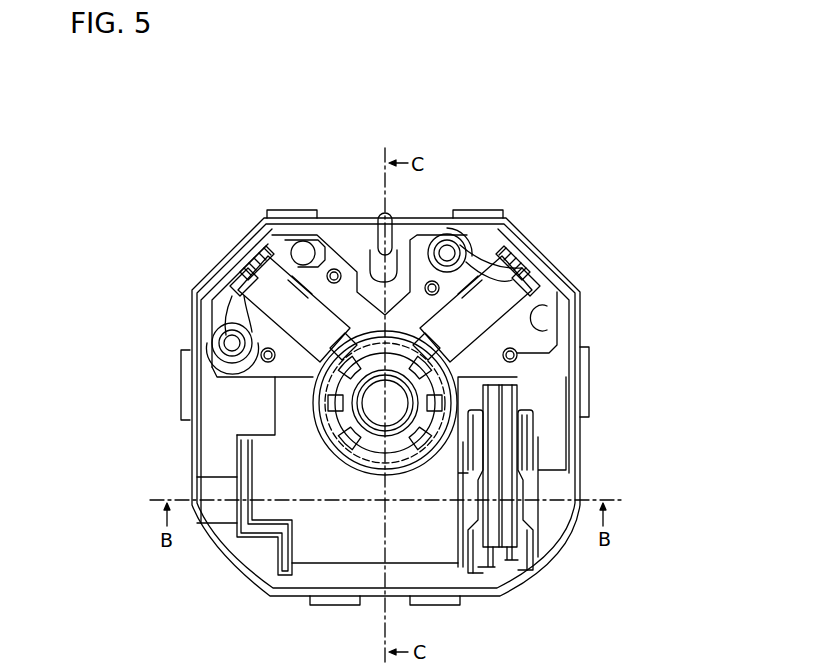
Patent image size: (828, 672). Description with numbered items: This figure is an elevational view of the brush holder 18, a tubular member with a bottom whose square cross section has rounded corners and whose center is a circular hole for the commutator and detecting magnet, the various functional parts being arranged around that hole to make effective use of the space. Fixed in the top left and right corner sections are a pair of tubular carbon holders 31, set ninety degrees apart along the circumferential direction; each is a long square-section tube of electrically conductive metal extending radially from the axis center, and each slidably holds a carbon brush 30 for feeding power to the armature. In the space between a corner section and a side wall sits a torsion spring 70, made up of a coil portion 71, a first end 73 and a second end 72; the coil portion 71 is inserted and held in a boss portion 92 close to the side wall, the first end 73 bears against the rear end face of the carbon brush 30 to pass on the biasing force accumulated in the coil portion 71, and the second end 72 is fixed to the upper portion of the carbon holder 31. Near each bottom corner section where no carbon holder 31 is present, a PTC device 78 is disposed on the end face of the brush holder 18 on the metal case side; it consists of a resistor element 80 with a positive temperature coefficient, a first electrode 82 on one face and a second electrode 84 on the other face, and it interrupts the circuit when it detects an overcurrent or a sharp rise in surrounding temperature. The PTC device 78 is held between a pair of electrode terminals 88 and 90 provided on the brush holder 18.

The brush holder 18 is at (593, 102).
The carbon brush 30 is at (330, 378).
The carbon holder 31 is at (306, 363).
The torsion spring 70 is at (361, 253).
The coil portion 71 is at (210, 335).
The second end 72 is at (252, 270).
The first end 73 is at (238, 292).
The PTC device 78 is at (513, 526).
The resistor element 80 is at (507, 548).
The first electrode 82 is at (498, 560).
The second electrode 84 is at (512, 557).
The electrode terminal 88 is at (484, 452).
The electrode terminal 90 is at (520, 463).
The boss portion 92 is at (228, 344).